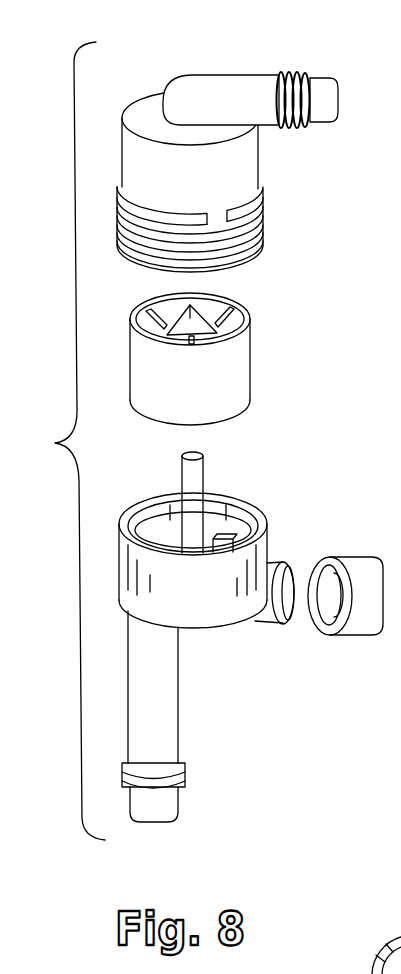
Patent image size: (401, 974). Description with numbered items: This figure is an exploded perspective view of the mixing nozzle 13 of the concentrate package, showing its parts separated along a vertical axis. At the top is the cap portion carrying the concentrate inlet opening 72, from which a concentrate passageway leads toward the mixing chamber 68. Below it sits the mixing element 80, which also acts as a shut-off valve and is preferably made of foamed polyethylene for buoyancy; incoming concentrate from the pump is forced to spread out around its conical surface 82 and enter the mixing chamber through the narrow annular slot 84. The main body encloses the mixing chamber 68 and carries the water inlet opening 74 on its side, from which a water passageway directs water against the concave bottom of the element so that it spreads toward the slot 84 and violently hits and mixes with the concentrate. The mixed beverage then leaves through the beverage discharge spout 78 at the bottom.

The mixing nozzle 13 is at (64, 441).
The concentrate inlet opening 72 is at (343, 88).
The mixing element 80 is at (203, 394).
The conical surface 82 is at (205, 295).
The mixing chamber 68 is at (226, 503).
The water inlet opening 74 is at (292, 566).
The beverage discharge spout 78 is at (168, 807).
The narrow annular slot 84 is at (354, 621).